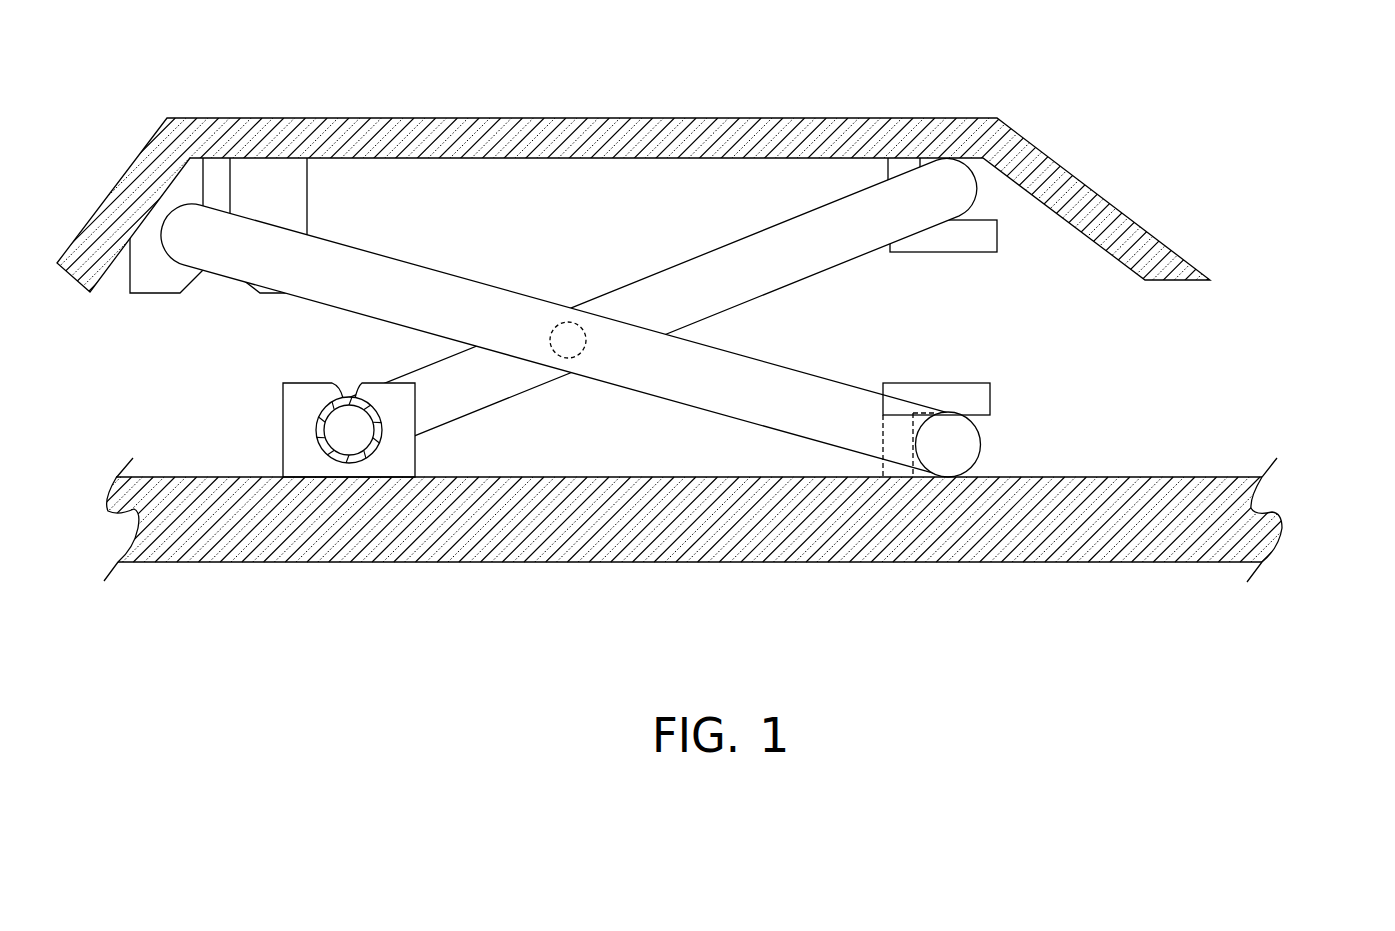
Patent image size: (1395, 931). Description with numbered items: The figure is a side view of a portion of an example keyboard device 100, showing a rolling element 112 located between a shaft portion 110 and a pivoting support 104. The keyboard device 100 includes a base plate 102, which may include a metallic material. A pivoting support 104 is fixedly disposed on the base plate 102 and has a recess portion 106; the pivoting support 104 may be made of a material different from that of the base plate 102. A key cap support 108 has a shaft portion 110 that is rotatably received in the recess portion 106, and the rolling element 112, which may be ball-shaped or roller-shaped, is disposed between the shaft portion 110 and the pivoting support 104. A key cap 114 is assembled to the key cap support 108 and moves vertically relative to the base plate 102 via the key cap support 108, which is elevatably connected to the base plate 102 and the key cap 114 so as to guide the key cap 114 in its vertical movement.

The keyboard device 100 is at (697, 410).
The base plate 102 is at (1282, 517).
The pivoting support 104 is at (283, 440).
The recess portion 106 is at (329, 372).
The key cap support 108 is at (500, 402).
The shaft portion 110 is at (352, 443).
The rolling element 112 is at (318, 418).
The key cap 114 is at (1088, 187).